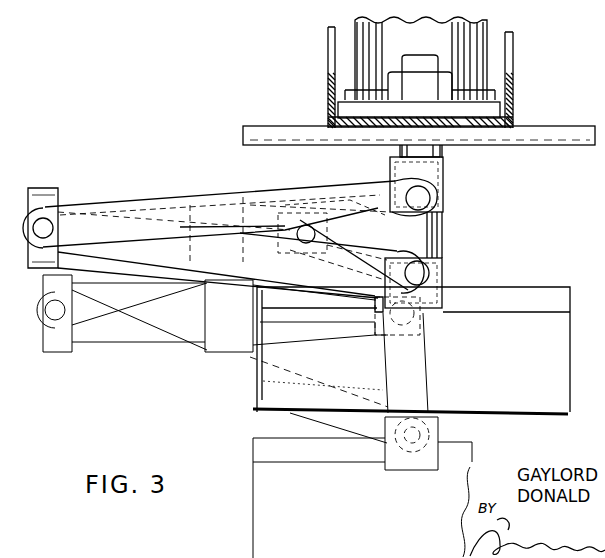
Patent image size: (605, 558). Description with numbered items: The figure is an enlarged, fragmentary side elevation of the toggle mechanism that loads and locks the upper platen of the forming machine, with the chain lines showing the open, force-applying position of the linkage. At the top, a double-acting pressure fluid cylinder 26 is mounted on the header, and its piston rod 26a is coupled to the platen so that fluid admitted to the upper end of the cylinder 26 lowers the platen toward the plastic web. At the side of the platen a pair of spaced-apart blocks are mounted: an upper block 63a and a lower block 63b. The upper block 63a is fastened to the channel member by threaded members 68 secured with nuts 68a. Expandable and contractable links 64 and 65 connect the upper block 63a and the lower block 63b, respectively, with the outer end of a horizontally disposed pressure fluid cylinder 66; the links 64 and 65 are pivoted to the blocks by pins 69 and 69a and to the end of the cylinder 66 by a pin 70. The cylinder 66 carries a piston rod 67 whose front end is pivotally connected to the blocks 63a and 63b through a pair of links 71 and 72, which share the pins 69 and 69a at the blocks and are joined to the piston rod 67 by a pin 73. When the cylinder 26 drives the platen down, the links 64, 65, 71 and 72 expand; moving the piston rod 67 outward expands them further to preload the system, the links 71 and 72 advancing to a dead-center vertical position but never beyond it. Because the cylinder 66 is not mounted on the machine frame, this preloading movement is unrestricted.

The pressure fluid cylinder 26 is at (472, 43).
The threaded members 68 is at (443, 97).
The nuts 68a is at (455, 135).
The pin 70 is at (43, 220).
The pressure fluid cylinder 66 is at (103, 195).
The link 65 is at (165, 247).
The link 64 is at (268, 197).
The pin 73 is at (312, 235).
The link 71 is at (345, 195).
The link 72 is at (368, 240).
The pin 69 is at (422, 195).
The upper block 63a is at (447, 195).
The piston rod 26a is at (445, 230).
The lower block 63b is at (443, 268).
The pin 69a is at (437, 317).
The piston rod 67 is at (410, 350).